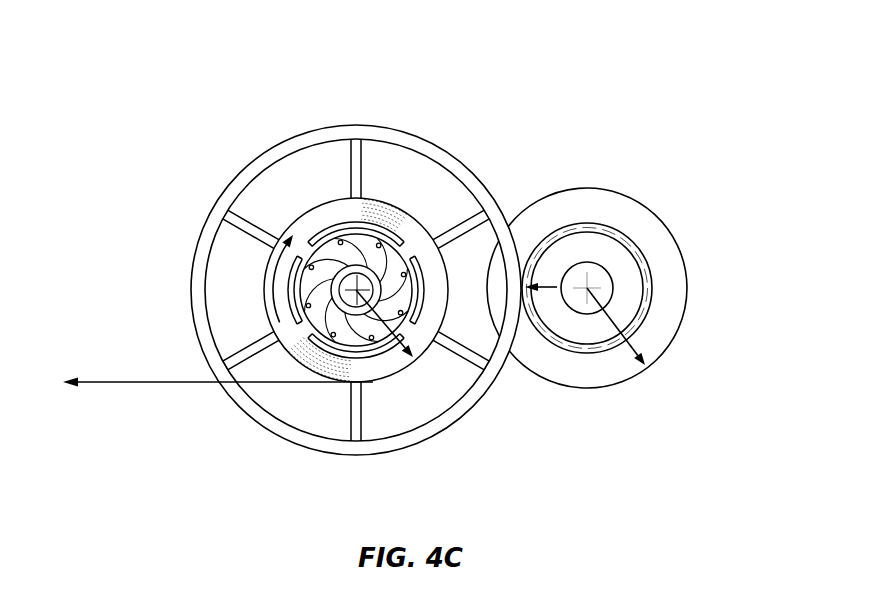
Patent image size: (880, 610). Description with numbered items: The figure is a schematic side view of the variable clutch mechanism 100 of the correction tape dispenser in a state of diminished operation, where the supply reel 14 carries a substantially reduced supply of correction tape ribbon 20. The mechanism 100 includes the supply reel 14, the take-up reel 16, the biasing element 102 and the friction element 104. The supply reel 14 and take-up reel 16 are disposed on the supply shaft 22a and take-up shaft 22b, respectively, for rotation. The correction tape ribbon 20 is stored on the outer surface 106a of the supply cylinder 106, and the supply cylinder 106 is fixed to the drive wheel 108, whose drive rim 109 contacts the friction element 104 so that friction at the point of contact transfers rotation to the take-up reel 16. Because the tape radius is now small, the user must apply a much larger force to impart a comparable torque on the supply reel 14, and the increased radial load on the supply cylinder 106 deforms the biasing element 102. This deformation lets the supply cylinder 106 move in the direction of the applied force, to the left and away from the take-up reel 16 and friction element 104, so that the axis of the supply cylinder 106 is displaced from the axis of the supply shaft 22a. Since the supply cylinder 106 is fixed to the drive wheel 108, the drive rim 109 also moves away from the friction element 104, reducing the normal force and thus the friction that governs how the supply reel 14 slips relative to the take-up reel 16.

The variable clutch mechanism 100 is at (507, 80).
The supply reel 14 is at (455, 444).
The take-up reel 16 is at (680, 215).
The correction tape ribbon 20 is at (267, 310).
The supply shaft 22a is at (350, 258).
The take-up shaft 22b is at (575, 278).
The biasing element 102 is at (362, 302).
The friction element 104 is at (648, 330).
The supply cylinder 106 is at (333, 352).
The outer surface 106a is at (307, 350).
The drive wheel 108 is at (381, 290).
The drive rim 109 is at (495, 365).